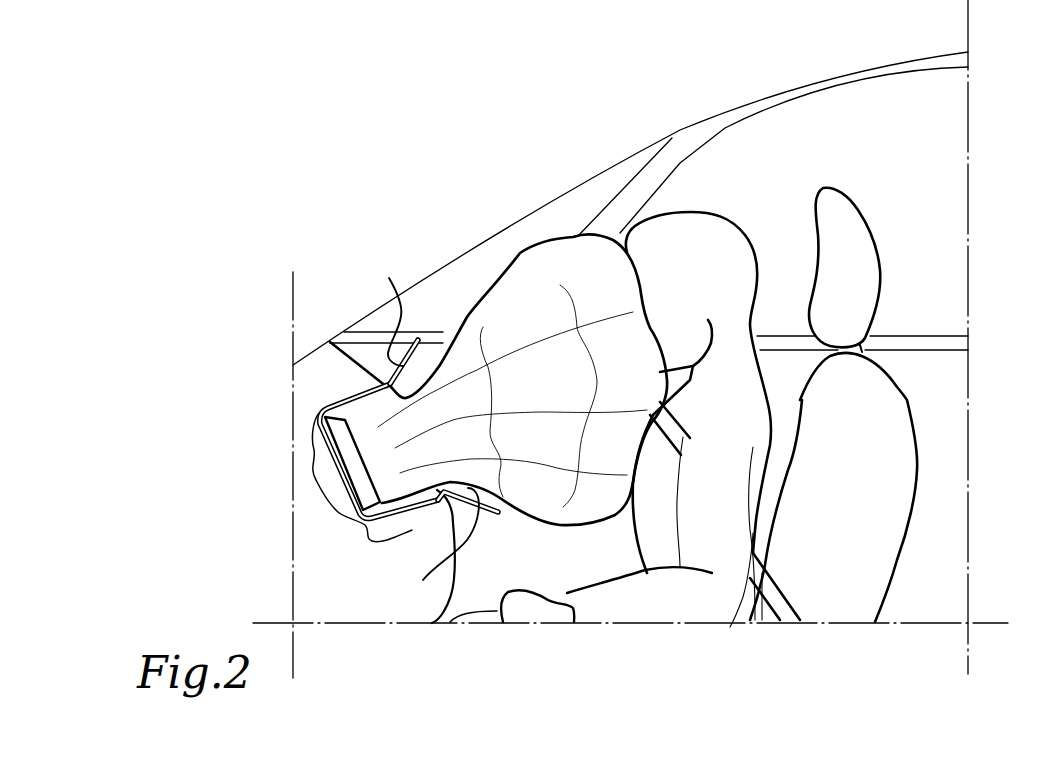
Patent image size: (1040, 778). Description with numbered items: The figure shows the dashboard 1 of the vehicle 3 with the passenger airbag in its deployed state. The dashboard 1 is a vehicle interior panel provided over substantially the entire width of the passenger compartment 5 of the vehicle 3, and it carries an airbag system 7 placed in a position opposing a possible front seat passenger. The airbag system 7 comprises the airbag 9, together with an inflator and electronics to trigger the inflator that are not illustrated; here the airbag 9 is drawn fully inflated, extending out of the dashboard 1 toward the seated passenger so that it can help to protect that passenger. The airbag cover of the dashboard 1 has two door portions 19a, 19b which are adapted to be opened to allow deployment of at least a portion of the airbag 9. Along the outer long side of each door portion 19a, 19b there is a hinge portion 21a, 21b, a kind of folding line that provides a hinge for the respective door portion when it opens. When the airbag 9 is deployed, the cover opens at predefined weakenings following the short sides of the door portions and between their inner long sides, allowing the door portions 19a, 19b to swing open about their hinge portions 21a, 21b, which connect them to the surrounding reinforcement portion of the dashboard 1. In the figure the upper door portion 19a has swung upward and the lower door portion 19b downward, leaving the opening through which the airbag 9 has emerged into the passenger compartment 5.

The dashboard 1 is at (472, 562).
The vehicle 3 is at (424, 131).
The passenger compartment 5 is at (881, 149).
The airbag system 7 is at (352, 518).
The airbag 9 is at (540, 381).
The door portion 19a is at (386, 306).
The door portion 19b is at (432, 550).
The hinge portion 21a is at (381, 394).
The hinge portion 21b is at (430, 492).